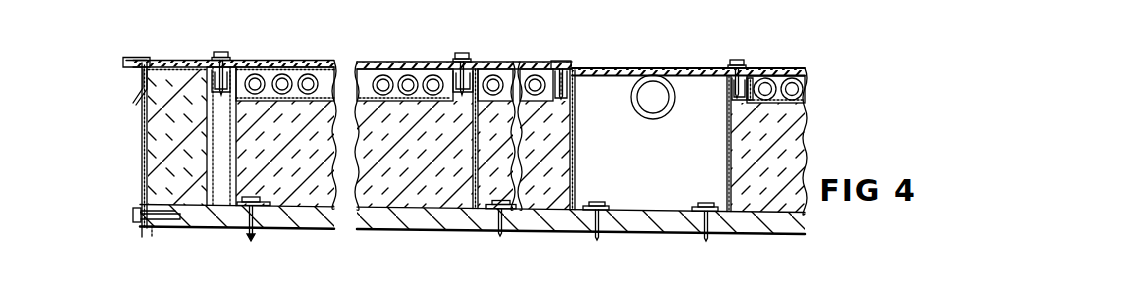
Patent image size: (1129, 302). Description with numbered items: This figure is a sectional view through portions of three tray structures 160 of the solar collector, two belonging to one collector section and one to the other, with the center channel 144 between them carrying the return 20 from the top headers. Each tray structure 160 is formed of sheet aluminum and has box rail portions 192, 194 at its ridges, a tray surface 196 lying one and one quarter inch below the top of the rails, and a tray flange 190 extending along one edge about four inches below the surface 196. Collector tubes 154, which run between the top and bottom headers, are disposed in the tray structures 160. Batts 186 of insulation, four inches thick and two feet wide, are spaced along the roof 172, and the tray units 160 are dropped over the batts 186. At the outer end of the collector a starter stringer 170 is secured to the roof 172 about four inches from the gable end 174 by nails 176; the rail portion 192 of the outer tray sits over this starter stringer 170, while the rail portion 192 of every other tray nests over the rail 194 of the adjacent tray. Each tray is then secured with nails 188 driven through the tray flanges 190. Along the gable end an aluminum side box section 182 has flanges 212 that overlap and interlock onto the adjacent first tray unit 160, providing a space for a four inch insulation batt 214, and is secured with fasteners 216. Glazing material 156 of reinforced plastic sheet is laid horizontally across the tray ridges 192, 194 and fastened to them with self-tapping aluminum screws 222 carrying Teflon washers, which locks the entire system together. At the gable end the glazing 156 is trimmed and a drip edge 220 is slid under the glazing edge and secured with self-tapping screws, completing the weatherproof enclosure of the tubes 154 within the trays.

The return 20 is at (656, 97).
The center channel 144 is at (650, 196).
The tubes 154 is at (407, 83).
The glazing material 156 is at (153, 61).
The tray structure 160 is at (464, 135).
The starter stringer 170 is at (197, 125).
The roof 172 is at (198, 229).
The gable end 174 is at (141, 225).
The nails 176 is at (253, 240).
The side box section 182 is at (137, 154).
The batts 186 is at (380, 204).
The nails 188 is at (498, 237).
The tray flange 190 is at (452, 210).
The box rail portion 192 is at (204, 80).
The box rail portion 194 is at (555, 62).
The tray surface 196 is at (303, 87).
The flanges 212 is at (238, 67).
The insulation batt 214 is at (157, 182).
The fasteners 216 is at (133, 215).
The drip edges 220 is at (135, 64).
The self-tapping aluminum screws 222 is at (221, 58).